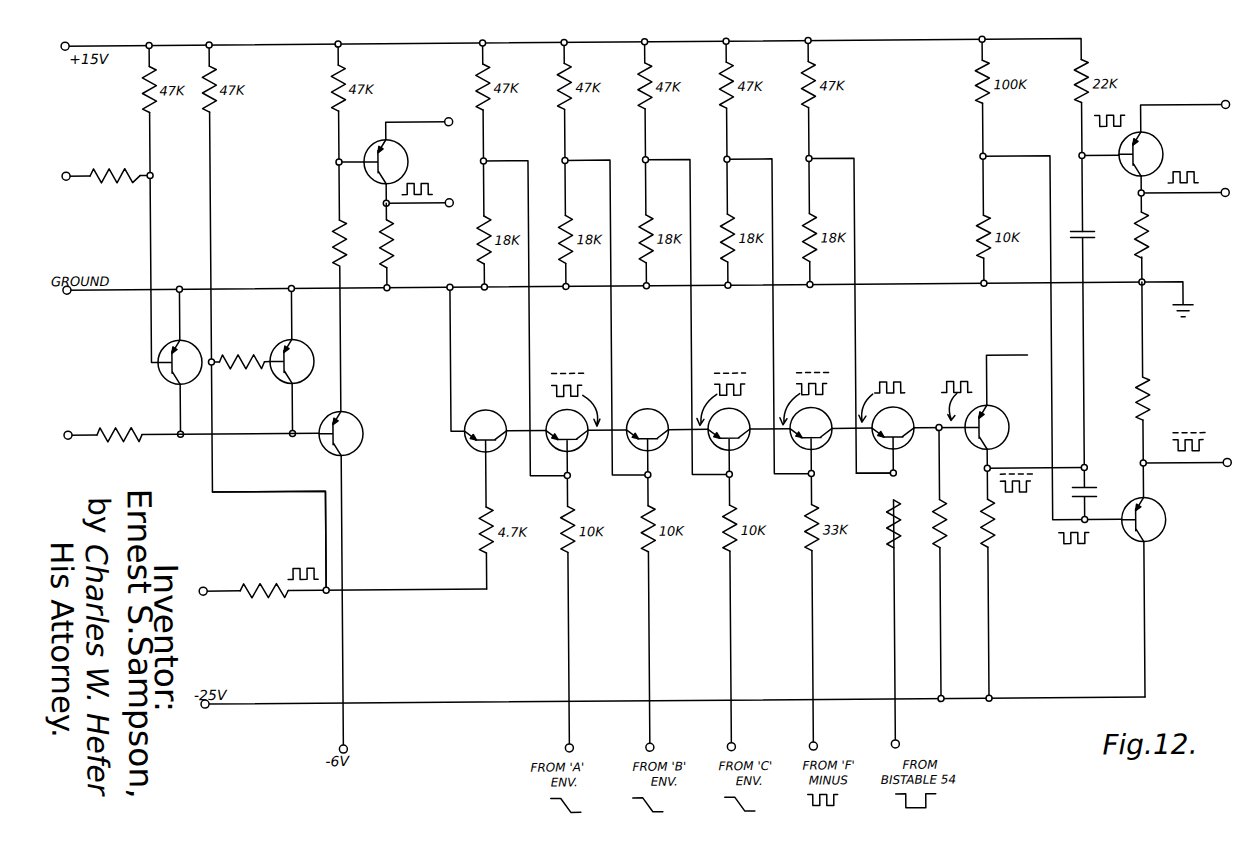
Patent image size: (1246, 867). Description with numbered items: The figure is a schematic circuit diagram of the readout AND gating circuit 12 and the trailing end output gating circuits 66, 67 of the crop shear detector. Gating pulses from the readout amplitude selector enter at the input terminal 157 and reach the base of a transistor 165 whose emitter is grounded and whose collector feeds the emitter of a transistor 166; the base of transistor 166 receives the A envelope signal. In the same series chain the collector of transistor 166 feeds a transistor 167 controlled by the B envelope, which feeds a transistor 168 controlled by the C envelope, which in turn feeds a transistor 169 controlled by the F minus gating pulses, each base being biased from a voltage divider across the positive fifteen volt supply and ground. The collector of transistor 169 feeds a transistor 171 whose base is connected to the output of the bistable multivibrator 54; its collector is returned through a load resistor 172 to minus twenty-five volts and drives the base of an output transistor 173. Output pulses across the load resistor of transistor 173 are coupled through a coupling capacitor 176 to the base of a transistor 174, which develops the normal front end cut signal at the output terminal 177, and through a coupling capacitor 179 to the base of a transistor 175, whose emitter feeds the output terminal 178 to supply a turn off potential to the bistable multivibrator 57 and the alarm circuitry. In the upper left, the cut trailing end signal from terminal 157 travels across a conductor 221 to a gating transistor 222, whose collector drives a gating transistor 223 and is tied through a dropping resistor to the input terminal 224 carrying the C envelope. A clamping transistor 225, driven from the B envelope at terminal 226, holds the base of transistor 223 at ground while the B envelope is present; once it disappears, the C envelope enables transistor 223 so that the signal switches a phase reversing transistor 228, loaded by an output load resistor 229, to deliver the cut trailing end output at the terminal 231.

The gating circuit 12 is at (658, 335).
The bistable multivibrator 54 is at (960, 779).
The bistable multivibrator 57 is at (1195, 490).
The trailing end output gating circuit 66 is at (266, 329).
The trailing end output gating circuit 67 is at (276, 160).
The input terminal 157 is at (203, 584).
The transistor 165 is at (486, 409).
The transistor 166 is at (552, 412).
The transistor 167 is at (648, 409).
The transistor 168 is at (745, 414).
The transistor 169 is at (828, 414).
The transistor 171 is at (908, 413).
The load resistor 172 is at (947, 502).
The output transistor 173 is at (1003, 411).
The transistor 174 is at (1159, 141).
The transistor 175 is at (1163, 531).
The coupling capacitor 176 is at (1090, 232).
The output terminal 177 is at (1227, 193).
The output terminal 178 is at (1227, 463).
The coupling capacitor 179 is at (1098, 491).
The conductor 221 is at (251, 489).
The gating transistor 222 is at (309, 336).
The gating transistor 223 is at (353, 449).
The input terminal 224 is at (70, 426).
The clamping transistor 225 is at (165, 373).
The terminal 226 is at (71, 171).
The phase reversing transistor 228 is at (411, 155).
The output load resistor 229 is at (385, 220).
The terminal 231 is at (450, 199).